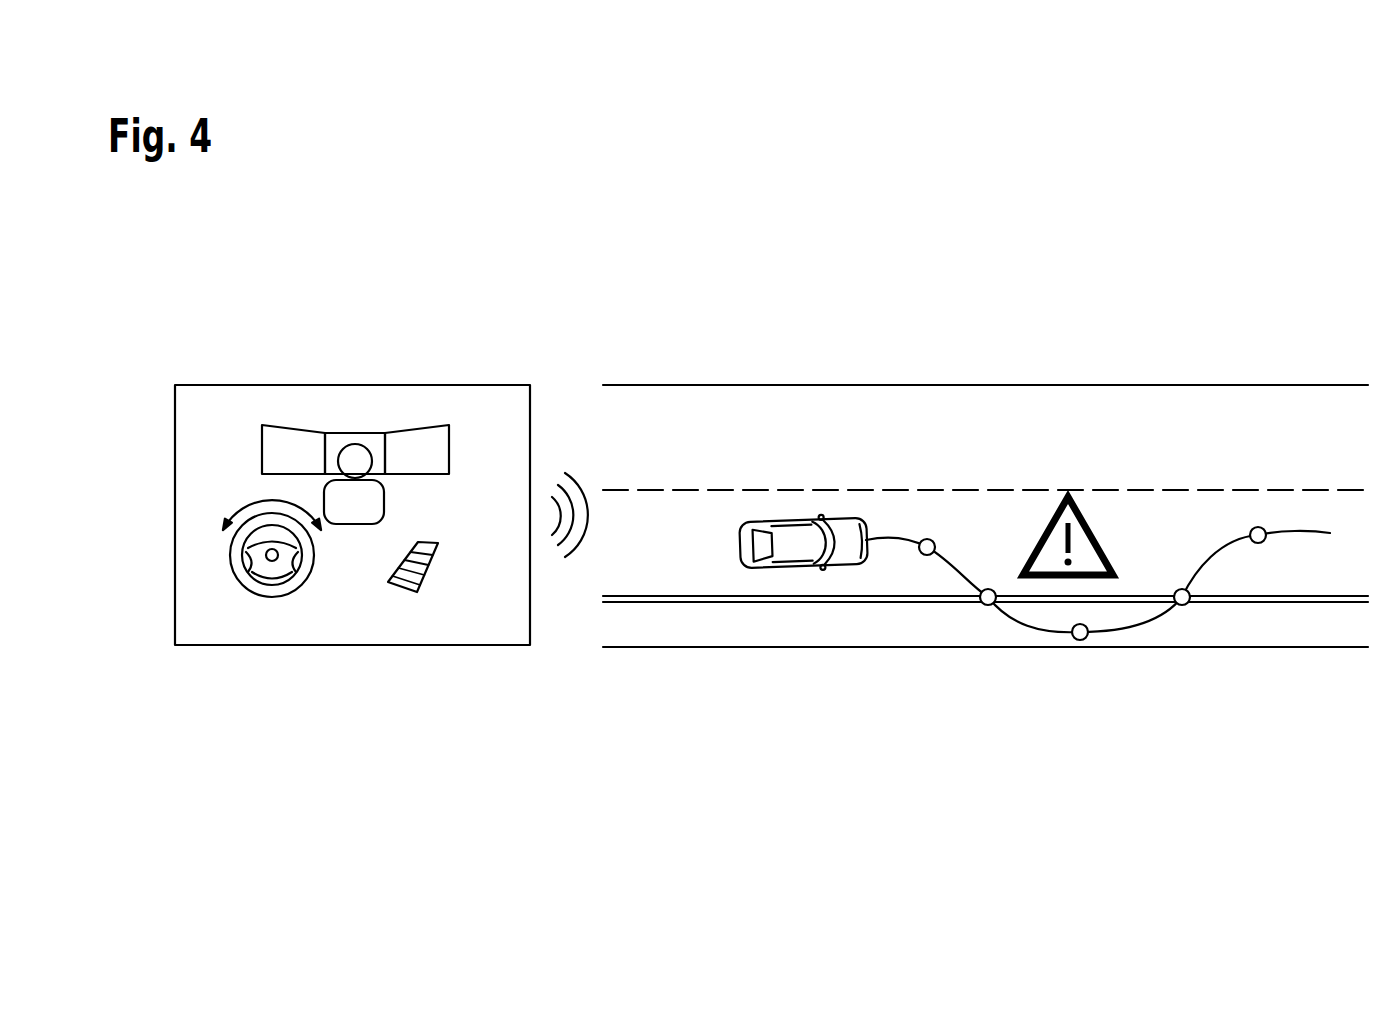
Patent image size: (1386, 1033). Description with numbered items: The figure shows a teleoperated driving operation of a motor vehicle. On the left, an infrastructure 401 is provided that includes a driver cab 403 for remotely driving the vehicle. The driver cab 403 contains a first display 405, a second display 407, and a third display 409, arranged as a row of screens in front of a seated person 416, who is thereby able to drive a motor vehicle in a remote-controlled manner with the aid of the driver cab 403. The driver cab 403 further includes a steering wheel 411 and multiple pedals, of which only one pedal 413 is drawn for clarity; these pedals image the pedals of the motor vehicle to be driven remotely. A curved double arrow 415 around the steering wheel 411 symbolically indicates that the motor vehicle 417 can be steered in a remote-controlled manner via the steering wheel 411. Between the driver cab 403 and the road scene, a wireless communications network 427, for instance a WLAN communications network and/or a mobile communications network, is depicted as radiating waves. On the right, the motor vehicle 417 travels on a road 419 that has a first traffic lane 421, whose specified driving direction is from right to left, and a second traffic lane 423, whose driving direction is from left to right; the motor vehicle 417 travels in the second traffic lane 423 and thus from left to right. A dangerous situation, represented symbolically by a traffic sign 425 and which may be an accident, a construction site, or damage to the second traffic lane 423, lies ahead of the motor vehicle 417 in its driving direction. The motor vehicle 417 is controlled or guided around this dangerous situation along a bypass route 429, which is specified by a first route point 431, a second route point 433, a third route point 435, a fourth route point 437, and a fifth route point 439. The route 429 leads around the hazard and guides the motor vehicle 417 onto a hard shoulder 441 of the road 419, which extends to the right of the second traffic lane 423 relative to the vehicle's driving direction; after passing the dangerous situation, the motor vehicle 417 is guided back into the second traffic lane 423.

The infrastructure 401 is at (542, 297).
The driver cab 403 is at (355, 371).
The first display 405 is at (287, 425).
The second display 407 is at (375, 430).
The third display 409 is at (430, 425).
The steering wheel 411 is at (273, 597).
The pedal 413 is at (397, 592).
The curved double arrow 415 is at (253, 503).
The person 416 is at (385, 503).
The motor vehicle 417 is at (848, 567).
The road 419 is at (985, 546).
The first traffic lane 421 is at (745, 398).
The second traffic lane 423 is at (663, 577).
The traffic sign 425 is at (1093, 527).
The wireless communications network 427 is at (573, 550).
The bypass route 429 is at (1147, 627).
The first route point 431 is at (932, 555).
The second route point 433 is at (988, 605).
The third route point 435 is at (1080, 640).
The fourth route point 437 is at (1183, 605).
The fifth route point 439 is at (1258, 543).
The hard shoulder 441 is at (743, 630).